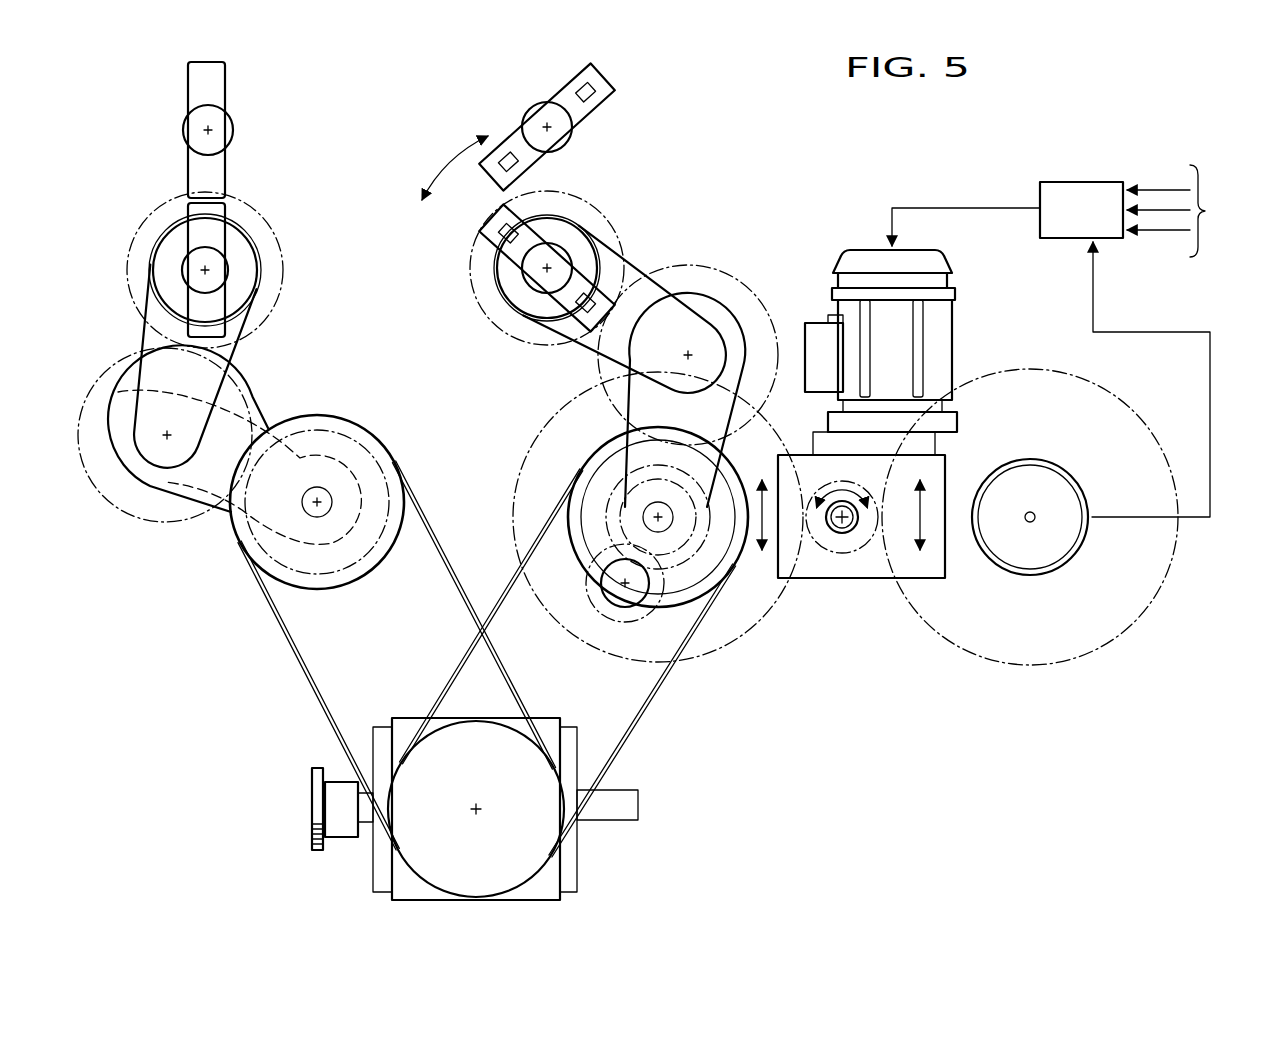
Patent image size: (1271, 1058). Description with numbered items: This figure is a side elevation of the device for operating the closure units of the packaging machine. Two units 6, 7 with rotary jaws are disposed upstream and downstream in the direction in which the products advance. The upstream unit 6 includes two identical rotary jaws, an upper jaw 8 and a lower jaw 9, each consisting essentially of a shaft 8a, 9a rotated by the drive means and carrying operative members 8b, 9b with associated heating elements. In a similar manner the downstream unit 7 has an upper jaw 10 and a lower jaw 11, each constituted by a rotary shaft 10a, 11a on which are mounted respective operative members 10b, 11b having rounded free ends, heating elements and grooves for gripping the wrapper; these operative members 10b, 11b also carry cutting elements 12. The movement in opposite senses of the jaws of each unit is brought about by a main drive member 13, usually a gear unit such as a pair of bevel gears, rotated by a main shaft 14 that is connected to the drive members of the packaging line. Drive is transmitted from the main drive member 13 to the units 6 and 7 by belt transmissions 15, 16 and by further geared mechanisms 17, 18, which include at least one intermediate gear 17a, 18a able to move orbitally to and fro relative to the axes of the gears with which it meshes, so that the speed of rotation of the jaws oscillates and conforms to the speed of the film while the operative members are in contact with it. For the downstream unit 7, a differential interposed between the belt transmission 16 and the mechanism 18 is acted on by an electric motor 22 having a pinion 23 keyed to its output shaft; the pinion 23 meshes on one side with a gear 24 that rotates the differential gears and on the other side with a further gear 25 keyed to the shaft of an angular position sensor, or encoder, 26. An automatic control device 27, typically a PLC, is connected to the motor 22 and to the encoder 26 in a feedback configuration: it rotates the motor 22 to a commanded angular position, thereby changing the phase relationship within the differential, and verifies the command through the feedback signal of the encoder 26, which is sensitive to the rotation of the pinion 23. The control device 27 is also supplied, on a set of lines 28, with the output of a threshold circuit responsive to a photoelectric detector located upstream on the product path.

The upstream closure unit 6 is at (170, 95).
The downstream closure unit 7 is at (508, 112).
The upper jaw 8 is at (248, 118).
The shaft 8a is at (200, 133).
The operative member 8b is at (212, 82).
The lower jaw 9 is at (264, 257).
The shaft 9a is at (193, 283).
The operative member 9b is at (203, 215).
The upper jaw 10 is at (582, 134).
The rotary shaft 10a is at (542, 115).
The operative member 10b is at (657, 97).
The lower jaw 11 is at (618, 216).
The rotary shaft 11a is at (527, 303).
The operative member 11b is at (540, 200).
The cutting element 12 is at (593, 75).
The main drive member 13 is at (552, 873).
The main shaft 14 is at (340, 802).
The belt transmission 15 is at (285, 628).
The belt transmission 16 is at (662, 690).
The geared mechanism 17 is at (127, 481).
The intermediate gear 17a is at (242, 382).
The geared mechanism 18 is at (718, 297).
The intermediate gear 18a is at (773, 295).
The electric motor 22 is at (940, 330).
The pinion 23 is at (850, 543).
The gear 24 is at (760, 605).
The gear 25 is at (1097, 650).
The angular position sensor 26 is at (1045, 462).
The automatic control device 27 is at (1065, 182).
The set of lines 28 is at (1205, 211).